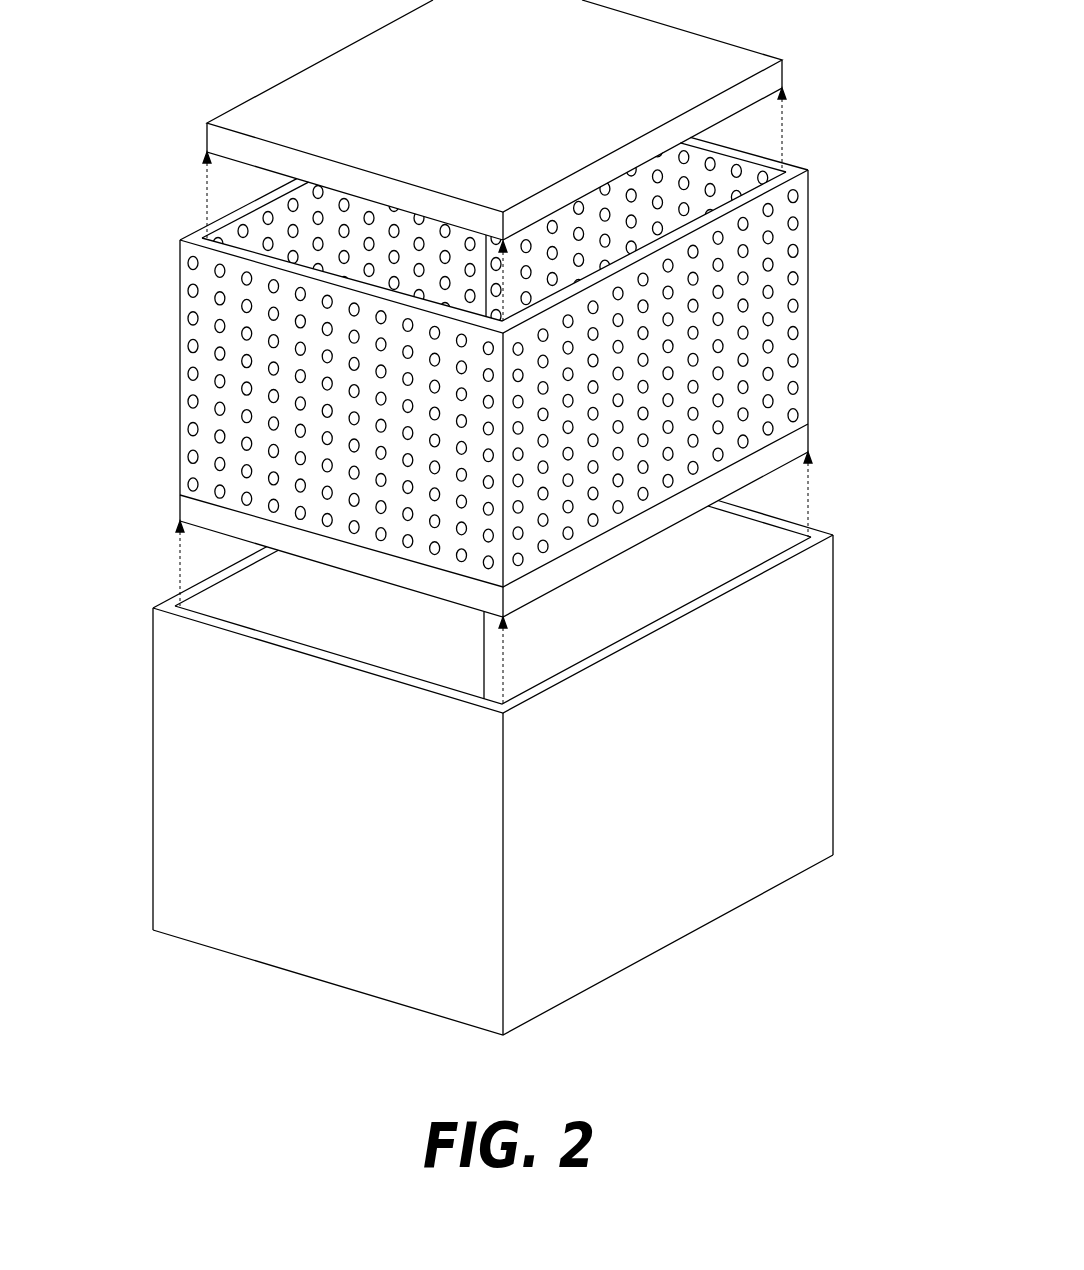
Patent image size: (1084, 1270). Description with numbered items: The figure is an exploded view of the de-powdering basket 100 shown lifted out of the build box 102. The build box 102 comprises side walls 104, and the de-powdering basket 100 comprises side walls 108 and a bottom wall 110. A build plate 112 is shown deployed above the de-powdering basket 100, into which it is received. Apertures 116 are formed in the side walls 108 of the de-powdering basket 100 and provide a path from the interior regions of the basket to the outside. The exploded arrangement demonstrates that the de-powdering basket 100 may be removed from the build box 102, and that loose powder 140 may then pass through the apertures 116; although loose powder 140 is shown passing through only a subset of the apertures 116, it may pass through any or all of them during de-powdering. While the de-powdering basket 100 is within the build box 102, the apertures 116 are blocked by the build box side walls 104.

The de-powdering basket 100 is at (126, 380).
The build box 102 is at (525, 768).
The side walls 104 is at (163, 751).
The side walls 108 is at (495, 381).
The bottom wall 110 is at (493, 313).
The build plate 112 is at (783, 73).
The apertures 116 is at (187, 266).
The loose powder 140 is at (165, 487).